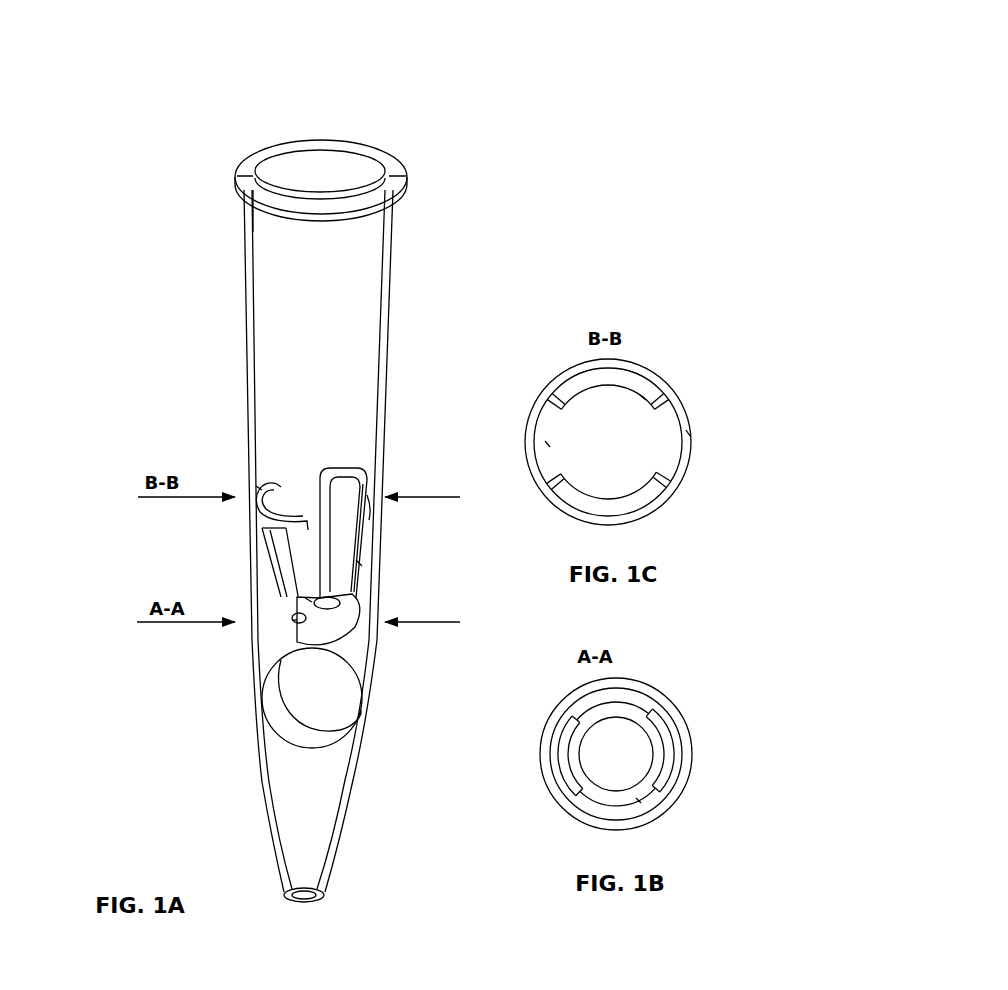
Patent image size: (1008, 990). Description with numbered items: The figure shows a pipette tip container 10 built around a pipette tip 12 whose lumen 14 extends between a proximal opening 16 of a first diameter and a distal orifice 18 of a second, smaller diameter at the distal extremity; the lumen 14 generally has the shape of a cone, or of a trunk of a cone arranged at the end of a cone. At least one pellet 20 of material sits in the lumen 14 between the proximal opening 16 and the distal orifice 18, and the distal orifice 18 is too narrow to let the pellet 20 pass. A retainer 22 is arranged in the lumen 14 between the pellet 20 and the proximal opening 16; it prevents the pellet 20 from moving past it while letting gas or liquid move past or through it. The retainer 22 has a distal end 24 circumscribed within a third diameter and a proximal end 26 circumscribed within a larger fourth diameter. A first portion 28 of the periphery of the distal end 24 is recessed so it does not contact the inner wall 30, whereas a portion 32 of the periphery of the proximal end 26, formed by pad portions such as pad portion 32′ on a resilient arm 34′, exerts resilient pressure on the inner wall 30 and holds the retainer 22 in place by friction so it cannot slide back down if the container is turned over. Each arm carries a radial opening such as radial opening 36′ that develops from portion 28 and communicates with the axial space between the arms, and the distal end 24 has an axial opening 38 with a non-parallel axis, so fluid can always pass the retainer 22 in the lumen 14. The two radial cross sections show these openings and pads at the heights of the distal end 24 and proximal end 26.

In FIG. 1A, the pipette tip container 10 is at (143, 183).
In FIG. 1A, the pipette tip 12 is at (388, 350).
In FIG. 1B, the pipette tip 12 is at (651, 691).
In FIG. 1C, the pipette tip 12 is at (684, 402).
In FIG. 1A, the lumen 14 is at (295, 330).
In FIG. 1B, the lumen 14 is at (585, 710).
In FIG. 1C, the lumen 14 is at (636, 452).
In FIG. 1A, the proximal opening 16 is at (332, 177).
In FIG. 1A, the distal orifice 18 is at (304, 900).
In FIG. 1A, the pellet 20 is at (290, 723).
In FIG. 1A, the retainer 22 is at (372, 522).
In FIG. 1A, the distal end 24 is at (345, 622).
In FIG. 1B, the distal end 24 is at (567, 762).
In FIG. 1A, the proximal end 26 is at (357, 470).
In FIG. 1C, the proximal end 26 is at (642, 392).
In FIG. 1A, the first portion of the periphery of the distal end 28 is at (300, 625).
In FIG. 1B, the first portion of the periphery of the distal end 28 is at (638, 798).
In FIG. 1A, the inner wall 30 is at (258, 232).
In FIG. 1B, the inner wall 30 is at (628, 689).
In FIG. 1C, the inner wall 30 is at (535, 422).
In FIG. 1A, the portion of the periphery of the proximal end 32 is at (110, 403).
In FIG. 1A, the pad portion 32′ is at (270, 516).
In FIG. 1C, the pad portion 32′ is at (574, 390).
In FIG. 1A, the resilient arm 34′ is at (300, 578).
In FIG. 1A, the radial opening 36′ is at (275, 548).
In FIG. 1A, the axial opening 38 is at (332, 628).
In FIG. 1B, the axial opening 38 is at (630, 760).